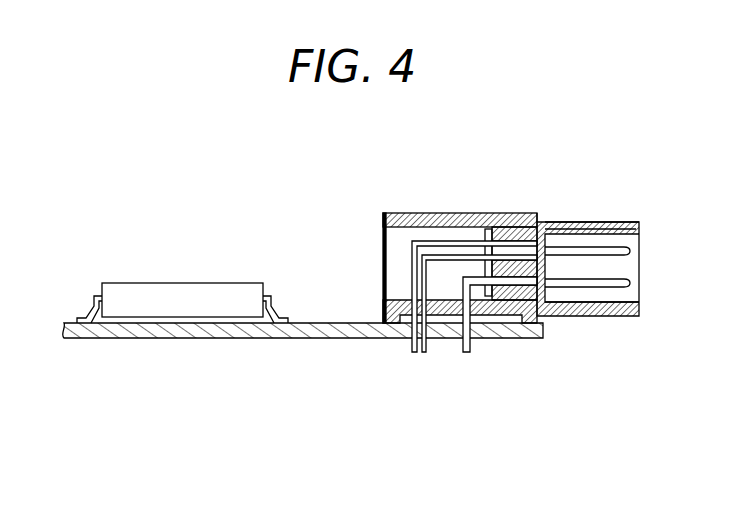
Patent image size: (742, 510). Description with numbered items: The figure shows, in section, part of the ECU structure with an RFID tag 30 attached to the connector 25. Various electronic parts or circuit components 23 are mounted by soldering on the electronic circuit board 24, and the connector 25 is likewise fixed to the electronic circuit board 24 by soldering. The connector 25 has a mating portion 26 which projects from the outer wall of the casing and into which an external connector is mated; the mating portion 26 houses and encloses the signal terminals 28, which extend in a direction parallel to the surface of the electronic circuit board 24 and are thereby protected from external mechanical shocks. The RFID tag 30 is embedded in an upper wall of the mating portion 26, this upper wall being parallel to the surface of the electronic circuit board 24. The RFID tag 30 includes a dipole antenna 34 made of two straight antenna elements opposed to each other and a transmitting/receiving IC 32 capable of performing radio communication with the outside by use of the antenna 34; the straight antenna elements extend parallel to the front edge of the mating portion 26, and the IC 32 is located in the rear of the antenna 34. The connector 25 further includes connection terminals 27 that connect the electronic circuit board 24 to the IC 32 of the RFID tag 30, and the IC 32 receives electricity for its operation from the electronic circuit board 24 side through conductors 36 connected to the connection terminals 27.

The circuit components 23 is at (218, 286).
The electronic circuit board 24 is at (222, 340).
The connector 25 is at (398, 203).
The mating portion 26 is at (605, 316).
The connection terminals 27 is at (415, 352).
The signal terminals 28 is at (632, 283).
The RFID tag 30 is at (623, 249).
The transmitting/receiving IC 32 is at (583, 222).
The dipole antenna 34 is at (622, 222).
The conductors 36 is at (473, 213).